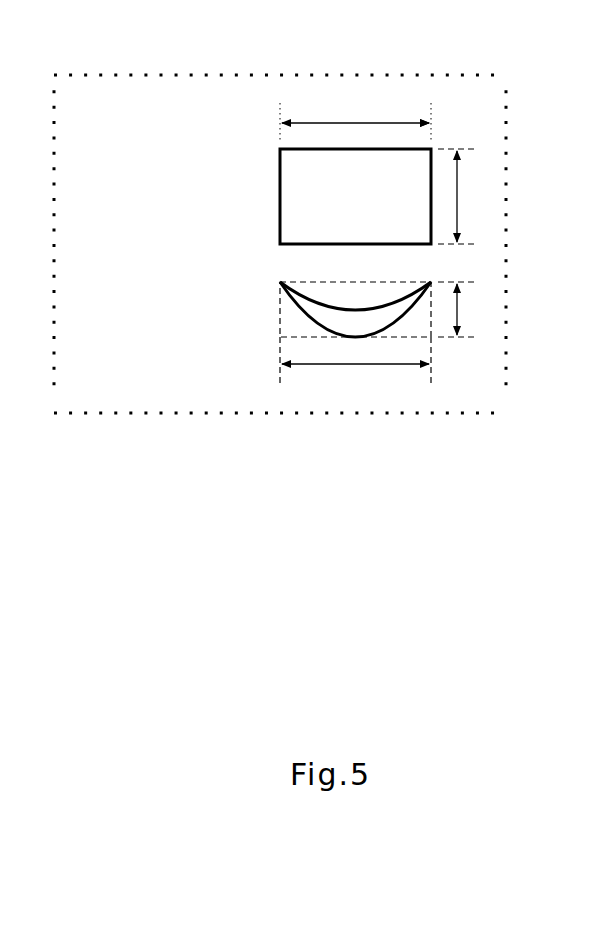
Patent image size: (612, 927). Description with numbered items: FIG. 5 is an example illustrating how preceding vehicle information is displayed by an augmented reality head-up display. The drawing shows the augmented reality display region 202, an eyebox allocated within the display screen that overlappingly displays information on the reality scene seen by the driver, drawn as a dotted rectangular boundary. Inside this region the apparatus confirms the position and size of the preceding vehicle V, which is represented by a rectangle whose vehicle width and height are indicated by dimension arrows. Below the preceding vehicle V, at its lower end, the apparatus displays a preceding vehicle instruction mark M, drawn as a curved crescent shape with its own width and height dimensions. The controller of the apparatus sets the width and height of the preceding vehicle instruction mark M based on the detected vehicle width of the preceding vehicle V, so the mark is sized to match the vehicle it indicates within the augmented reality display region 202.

The augmented reality display region 202 is at (316, 70).
The preceding vehicle V is at (280, 196).
The preceding vehicle instruction mark M is at (280, 309).